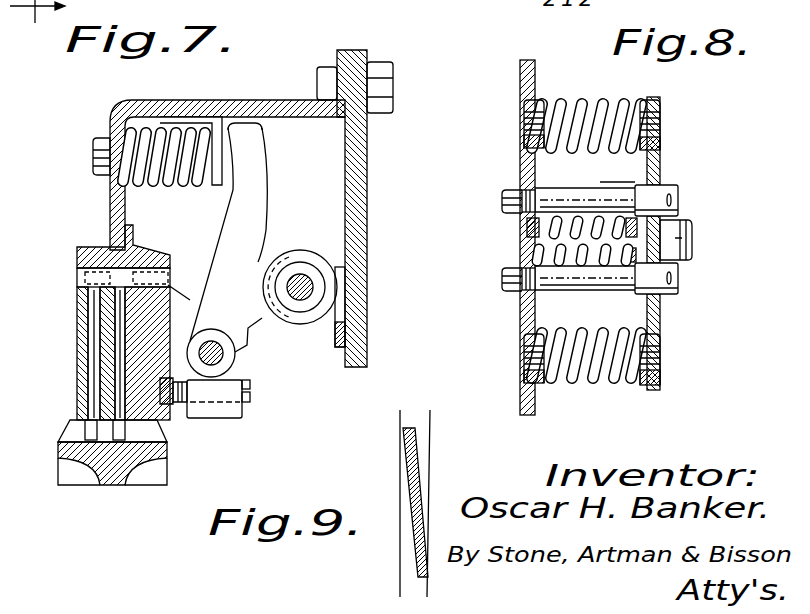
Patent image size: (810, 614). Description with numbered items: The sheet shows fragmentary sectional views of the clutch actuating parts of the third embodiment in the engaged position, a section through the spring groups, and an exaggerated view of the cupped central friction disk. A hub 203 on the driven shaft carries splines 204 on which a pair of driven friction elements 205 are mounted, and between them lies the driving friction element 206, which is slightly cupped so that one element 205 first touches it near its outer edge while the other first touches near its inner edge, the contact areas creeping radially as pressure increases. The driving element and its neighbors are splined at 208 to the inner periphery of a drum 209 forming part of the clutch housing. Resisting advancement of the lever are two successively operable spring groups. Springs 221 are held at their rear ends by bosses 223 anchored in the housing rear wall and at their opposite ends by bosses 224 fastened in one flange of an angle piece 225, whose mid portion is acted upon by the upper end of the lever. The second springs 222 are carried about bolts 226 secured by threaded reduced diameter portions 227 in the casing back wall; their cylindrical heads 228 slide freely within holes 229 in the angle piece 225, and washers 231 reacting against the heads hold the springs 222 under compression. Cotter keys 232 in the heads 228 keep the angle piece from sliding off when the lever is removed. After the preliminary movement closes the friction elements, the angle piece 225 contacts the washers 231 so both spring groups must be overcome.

In FIG. 7, the springs 221 is at (140, 128).
In FIG. 8, the springs 221 is at (608, 102).
In FIG. 7, the angle piece 225 is at (203, 122).
In FIG. 8, the angle piece 225 is at (668, 157).
In FIG. 7, the bolts 226 is at (93, 156).
In FIG. 8, the bolts 226 is at (527, 187).
In FIG. 7, the drum 209 is at (91, 247).
In FIG. 7, the splines 208 is at (77, 273).
In FIG. 7, the driving friction element 206 is at (107, 347).
In FIG. 9, the driving friction element 206 is at (420, 468).
In FIG. 7, the driven friction elements 205 is at (120, 380).
In FIG. 7, the splines 204 is at (72, 428).
In FIG. 7, the hub 203 is at (113, 482).
In FIG. 8, the bosses 223 is at (522, 123).
In FIG. 8, the bosses 224 is at (662, 127).
In FIG. 8, the threaded reduced diameter portions 227 is at (545, 200).
In FIG. 8, the cotter keys 232 is at (676, 208).
In FIG. 8, the springs 222 is at (553, 225).
In FIG. 8, the cylindrical heads 228 is at (670, 185).
In FIG. 8, the holes 229 is at (660, 303).
In FIG. 8, the washers 231 is at (630, 171).